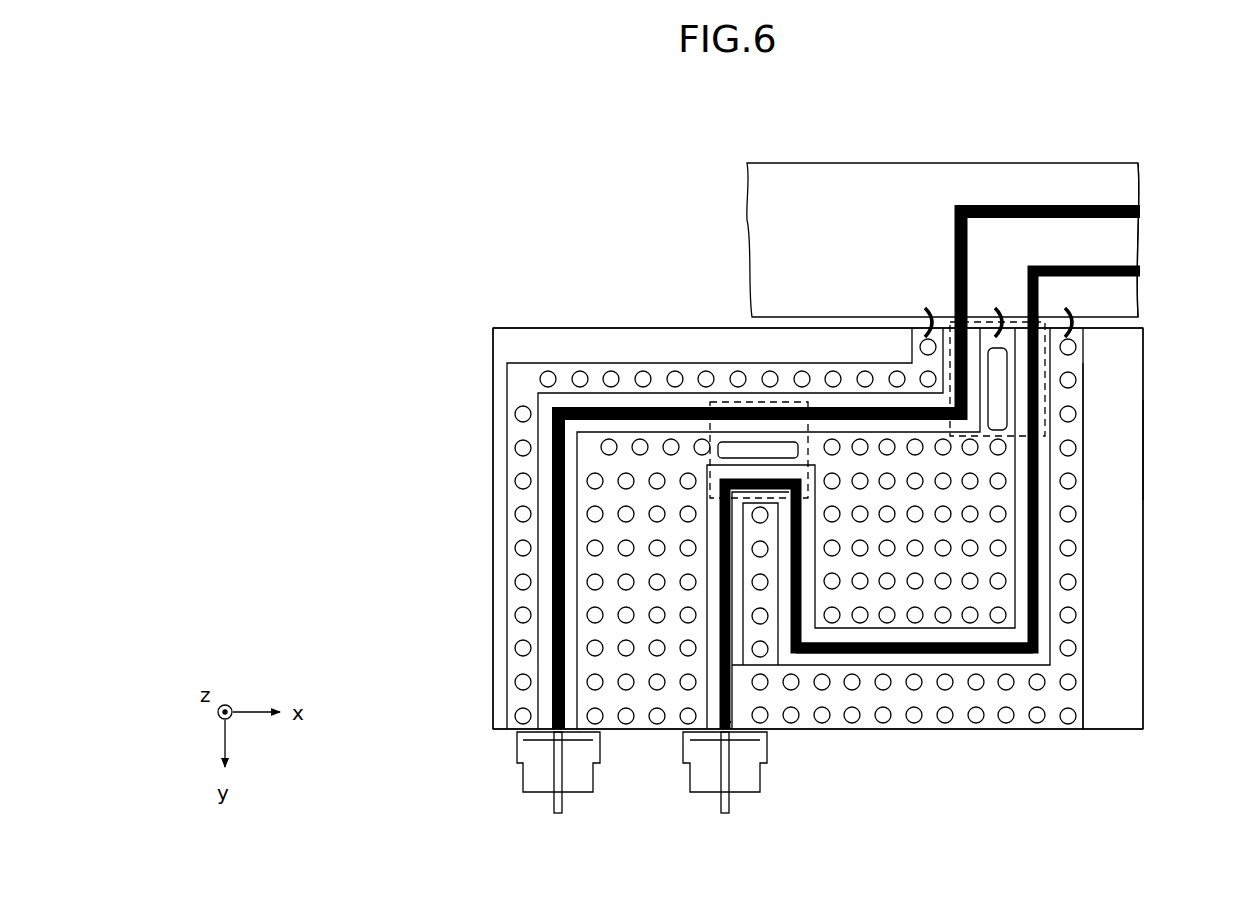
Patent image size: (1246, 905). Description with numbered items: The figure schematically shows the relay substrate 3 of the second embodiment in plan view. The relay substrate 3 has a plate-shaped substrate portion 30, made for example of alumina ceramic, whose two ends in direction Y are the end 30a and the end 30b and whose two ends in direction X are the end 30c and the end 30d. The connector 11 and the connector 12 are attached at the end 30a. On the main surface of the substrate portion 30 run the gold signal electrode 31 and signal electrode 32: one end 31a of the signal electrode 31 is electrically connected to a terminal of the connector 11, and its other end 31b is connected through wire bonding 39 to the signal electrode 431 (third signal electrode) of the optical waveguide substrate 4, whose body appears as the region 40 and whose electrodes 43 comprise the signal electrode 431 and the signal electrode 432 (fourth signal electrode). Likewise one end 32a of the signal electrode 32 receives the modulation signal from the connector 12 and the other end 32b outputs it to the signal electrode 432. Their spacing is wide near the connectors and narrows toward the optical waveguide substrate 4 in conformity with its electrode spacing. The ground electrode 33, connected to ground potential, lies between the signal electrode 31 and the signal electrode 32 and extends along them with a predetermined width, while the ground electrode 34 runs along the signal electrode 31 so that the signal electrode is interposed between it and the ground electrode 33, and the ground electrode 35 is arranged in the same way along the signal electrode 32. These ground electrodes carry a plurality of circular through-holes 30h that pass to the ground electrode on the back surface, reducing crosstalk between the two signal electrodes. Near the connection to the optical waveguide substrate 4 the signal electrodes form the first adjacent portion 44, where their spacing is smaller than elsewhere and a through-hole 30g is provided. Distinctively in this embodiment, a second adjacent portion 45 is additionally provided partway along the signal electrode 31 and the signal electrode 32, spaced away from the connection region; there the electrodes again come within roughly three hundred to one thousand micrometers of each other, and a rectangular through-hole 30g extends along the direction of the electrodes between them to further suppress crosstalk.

The relay substrate 3 is at (1147, 444).
The optical waveguide substrate 4 is at (1116, 161).
The connector 11 is at (540, 788).
The connector 12 is at (743, 788).
The substrate portion 30 is at (1123, 492).
The end 30a is at (1118, 732).
The end 30b is at (1101, 327).
The end 30c is at (492, 596).
The end 30d is at (1145, 702).
The through-hole 30g is at (752, 457).
The through-hole 30h is at (523, 415).
The signal electrode 31 is at (540, 660).
The one end 31a is at (552, 733).
The other end 31b is at (960, 315).
The signal electrode 32 is at (740, 693).
The one end 32a is at (718, 733).
The other end 32b is at (1031, 315).
The ground electrode 33 is at (923, 636).
The ground electrode 34 is at (503, 439).
The ground electrode 35 is at (1090, 678).
The wire bonding 39 is at (1046, 324).
The flexible substrate 40 is at (877, 175).
The wiring of flexible board 43 is at (1050, 202).
The signal electrode 431 is at (1025, 205).
The signal electrode 432 is at (1093, 265).
The first adjacent portion 44 is at (923, 340).
The second adjacent portion 45 is at (712, 400).